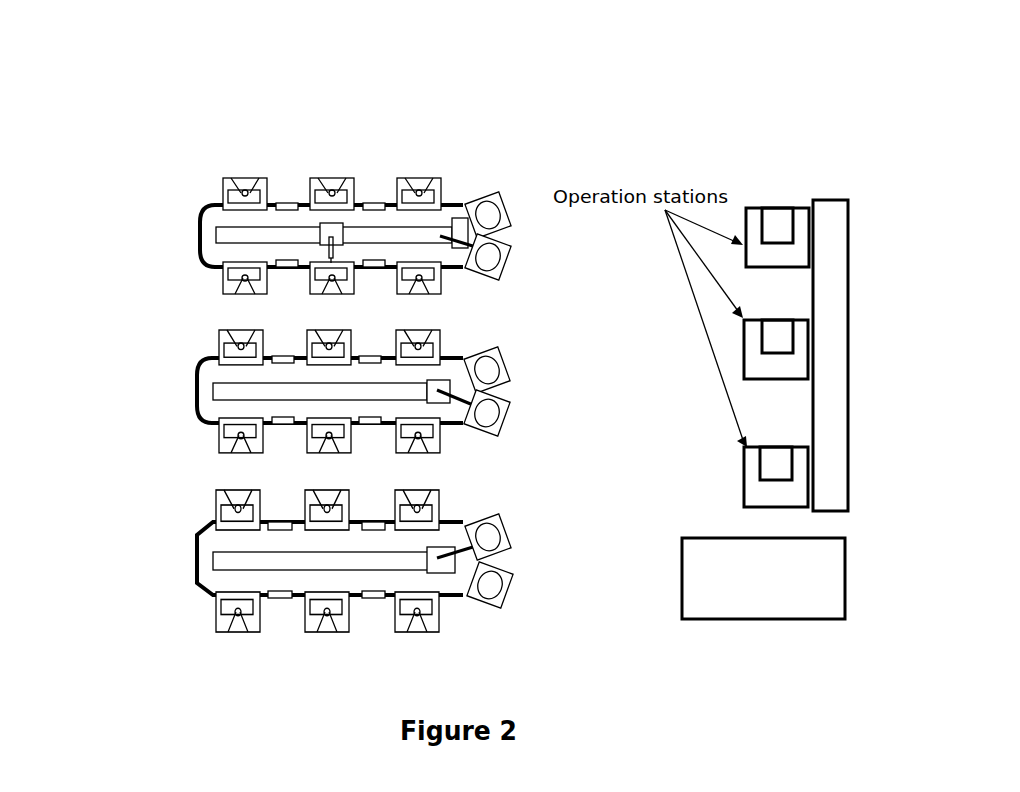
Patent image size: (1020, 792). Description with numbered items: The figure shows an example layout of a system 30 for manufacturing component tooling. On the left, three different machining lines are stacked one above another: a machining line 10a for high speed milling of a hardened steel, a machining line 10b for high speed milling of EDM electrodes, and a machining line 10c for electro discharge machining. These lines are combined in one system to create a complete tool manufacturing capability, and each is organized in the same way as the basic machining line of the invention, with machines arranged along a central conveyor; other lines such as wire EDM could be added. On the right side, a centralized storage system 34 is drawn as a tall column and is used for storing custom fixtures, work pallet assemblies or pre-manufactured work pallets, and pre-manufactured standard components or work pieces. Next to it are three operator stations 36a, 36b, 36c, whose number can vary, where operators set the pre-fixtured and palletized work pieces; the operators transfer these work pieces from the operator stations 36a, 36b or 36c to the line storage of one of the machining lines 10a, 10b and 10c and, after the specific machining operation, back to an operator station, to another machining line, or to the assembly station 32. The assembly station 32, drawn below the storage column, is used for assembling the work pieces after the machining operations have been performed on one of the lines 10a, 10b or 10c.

The system for manufacturing component tooling 30 is at (499, 85).
The machining line 10a is at (170, 247).
The machining line 10b is at (157, 383).
The machining line 10c is at (148, 558).
The assembly station 32 is at (683, 582).
The centralized storage system 34 is at (848, 330).
The operator station 36a is at (777, 208).
The operator station 36b is at (803, 382).
The operator station 36c is at (743, 480).